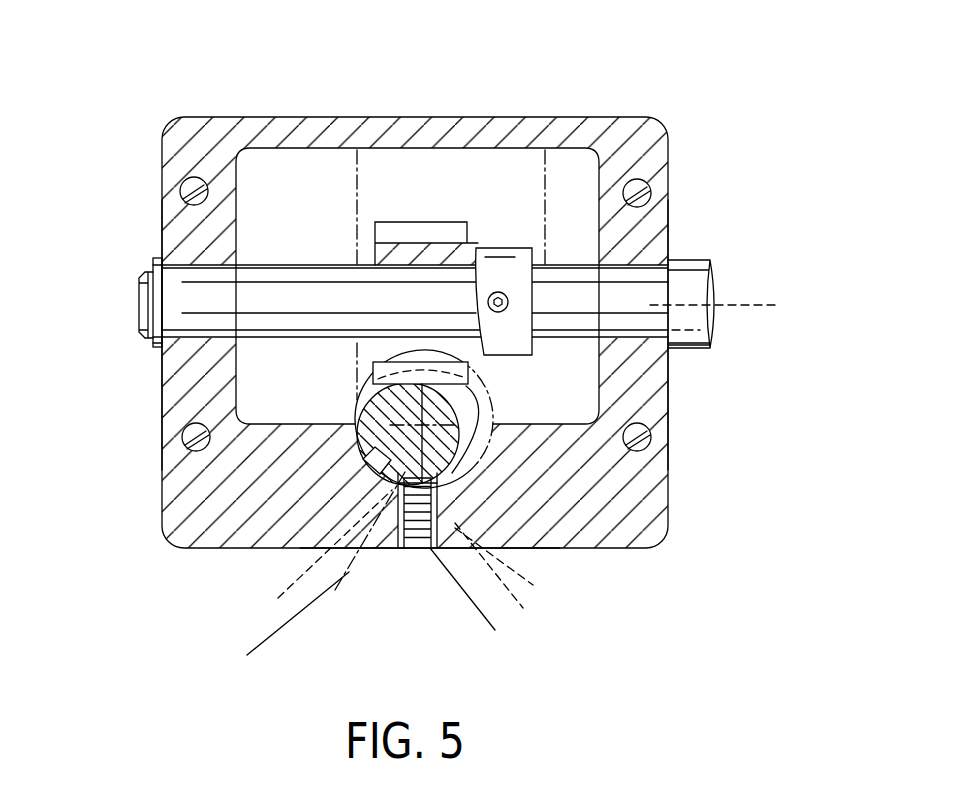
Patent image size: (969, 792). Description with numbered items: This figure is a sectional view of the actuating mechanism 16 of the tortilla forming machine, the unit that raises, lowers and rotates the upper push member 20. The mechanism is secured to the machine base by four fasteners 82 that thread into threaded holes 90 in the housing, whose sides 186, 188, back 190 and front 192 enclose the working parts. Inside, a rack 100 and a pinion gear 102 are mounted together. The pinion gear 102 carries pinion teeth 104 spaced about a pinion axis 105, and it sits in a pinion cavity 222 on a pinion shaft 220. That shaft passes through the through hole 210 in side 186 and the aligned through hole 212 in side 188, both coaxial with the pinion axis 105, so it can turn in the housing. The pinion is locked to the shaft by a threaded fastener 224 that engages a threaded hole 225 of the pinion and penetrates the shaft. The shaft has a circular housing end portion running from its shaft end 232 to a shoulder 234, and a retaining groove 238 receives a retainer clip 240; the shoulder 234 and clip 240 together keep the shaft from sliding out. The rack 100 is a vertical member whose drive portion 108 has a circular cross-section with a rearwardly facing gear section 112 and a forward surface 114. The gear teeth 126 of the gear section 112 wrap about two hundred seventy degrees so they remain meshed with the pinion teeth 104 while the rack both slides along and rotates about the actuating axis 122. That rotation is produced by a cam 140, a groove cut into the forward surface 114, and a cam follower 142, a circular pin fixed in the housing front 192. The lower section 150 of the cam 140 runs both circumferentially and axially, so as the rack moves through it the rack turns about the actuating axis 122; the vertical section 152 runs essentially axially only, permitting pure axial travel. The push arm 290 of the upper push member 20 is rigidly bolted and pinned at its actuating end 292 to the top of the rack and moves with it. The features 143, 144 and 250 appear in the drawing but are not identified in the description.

The actuating mechanism 16 is at (583, 92).
The upper push member 20 is at (272, 641).
The fasteners 82 is at (181, 193).
The threaded holes 90 is at (187, 185).
The rack 100 is at (470, 400).
The pinion gear 102 is at (440, 232).
The pinion teeth 104 is at (400, 222).
The pinion axis 105 is at (775, 307).
The drive portion 108 is at (478, 432).
The gear section 112 is at (476, 428).
The forward surface 114 is at (368, 440).
The actuating axis 122 is at (438, 478).
The gear teeth 126 is at (373, 383).
The cam 140 is at (372, 470).
The cam follower 142 is at (522, 565).
The pivot line 143 is at (518, 574).
The pivot line 144 is at (491, 602).
The lower section 150 is at (310, 558).
The vertical section 152 is at (372, 471).
The side 186 is at (159, 390).
The side 188 is at (670, 204).
The back 190 is at (305, 118).
The front 192 is at (617, 548).
The through hole 210 is at (165, 273).
The through hole 212 is at (650, 264).
The pinion shaft 220 is at (648, 298).
The pinion cavity 222 is at (271, 178).
The threaded fastener 224 is at (510, 300).
The threaded hole 225 is at (510, 307).
The shaft end 232 is at (139, 310).
The shoulder 234 is at (670, 315).
The retaining groove 238 is at (152, 265).
The retainer clip 240 is at (153, 348).
The shaft end lower edge 250 is at (705, 323).
The push arm 290 is at (335, 587).
The actuating end 292 is at (403, 352).